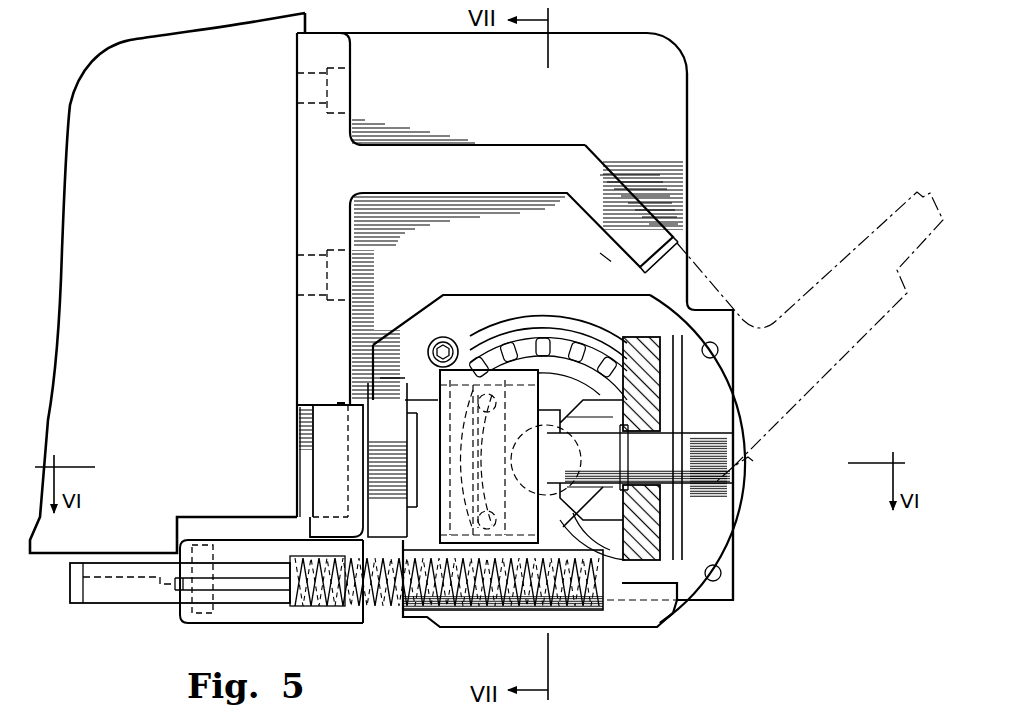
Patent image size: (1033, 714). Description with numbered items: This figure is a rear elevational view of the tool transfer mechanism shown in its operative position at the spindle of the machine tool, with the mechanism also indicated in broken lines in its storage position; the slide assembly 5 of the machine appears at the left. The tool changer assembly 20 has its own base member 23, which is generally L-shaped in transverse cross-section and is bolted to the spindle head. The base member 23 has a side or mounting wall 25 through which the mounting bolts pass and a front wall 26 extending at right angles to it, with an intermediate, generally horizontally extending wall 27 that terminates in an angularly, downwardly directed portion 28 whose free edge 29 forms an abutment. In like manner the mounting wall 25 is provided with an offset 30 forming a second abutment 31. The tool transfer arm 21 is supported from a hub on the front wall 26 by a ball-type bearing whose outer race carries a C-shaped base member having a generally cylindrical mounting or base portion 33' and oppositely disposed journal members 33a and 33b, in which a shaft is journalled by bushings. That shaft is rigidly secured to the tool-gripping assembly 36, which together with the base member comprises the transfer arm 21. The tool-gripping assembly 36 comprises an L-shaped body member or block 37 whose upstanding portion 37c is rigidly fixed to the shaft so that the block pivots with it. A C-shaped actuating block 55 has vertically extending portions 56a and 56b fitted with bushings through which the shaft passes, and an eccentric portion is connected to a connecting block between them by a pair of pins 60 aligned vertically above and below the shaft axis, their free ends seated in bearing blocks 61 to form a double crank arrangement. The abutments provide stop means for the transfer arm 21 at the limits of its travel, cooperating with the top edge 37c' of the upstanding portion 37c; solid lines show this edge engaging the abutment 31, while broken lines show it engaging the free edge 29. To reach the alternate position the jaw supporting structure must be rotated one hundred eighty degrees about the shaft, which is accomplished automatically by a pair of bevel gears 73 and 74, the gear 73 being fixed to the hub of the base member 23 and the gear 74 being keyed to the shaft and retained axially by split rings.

The slide assembly 5 is at (176, 302).
The tool changer assembly 20 is at (708, 605).
The tool transfer arm 21 is at (467, 634).
The base member 23 is at (690, 92).
The mounting wall 25 is at (305, 168).
The front wall 26 is at (680, 128).
The intermediate wall 27 is at (430, 158).
The downwardly directed portion 28 is at (640, 213).
The free edge 29 is at (677, 245).
The offset 30 is at (300, 438).
The abutment 31 is at (297, 408).
The mounting or base portion 33' is at (501, 298).
The journal member 33a is at (713, 533).
The journal member 33b is at (375, 475).
The tool-gripping assembly 36 is at (346, 636).
The body member or block 37 is at (220, 617).
The upstanding portion 37c is at (309, 471).
The top edge 37c' is at (436, 314).
The actuating block 55 is at (507, 550).
The vertically extending portion 56a is at (423, 427).
The vertically extending portion 56b is at (557, 410).
The pins 60 is at (510, 456).
The bearing blocks 61 is at (493, 461).
The bevel gear 73 is at (550, 360).
The bevel gear 74 is at (653, 577).